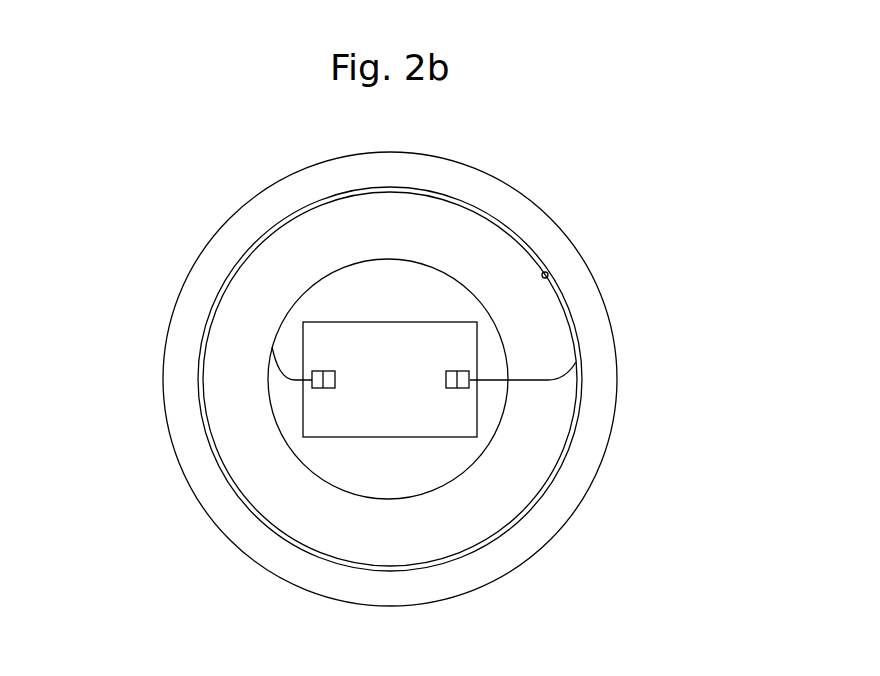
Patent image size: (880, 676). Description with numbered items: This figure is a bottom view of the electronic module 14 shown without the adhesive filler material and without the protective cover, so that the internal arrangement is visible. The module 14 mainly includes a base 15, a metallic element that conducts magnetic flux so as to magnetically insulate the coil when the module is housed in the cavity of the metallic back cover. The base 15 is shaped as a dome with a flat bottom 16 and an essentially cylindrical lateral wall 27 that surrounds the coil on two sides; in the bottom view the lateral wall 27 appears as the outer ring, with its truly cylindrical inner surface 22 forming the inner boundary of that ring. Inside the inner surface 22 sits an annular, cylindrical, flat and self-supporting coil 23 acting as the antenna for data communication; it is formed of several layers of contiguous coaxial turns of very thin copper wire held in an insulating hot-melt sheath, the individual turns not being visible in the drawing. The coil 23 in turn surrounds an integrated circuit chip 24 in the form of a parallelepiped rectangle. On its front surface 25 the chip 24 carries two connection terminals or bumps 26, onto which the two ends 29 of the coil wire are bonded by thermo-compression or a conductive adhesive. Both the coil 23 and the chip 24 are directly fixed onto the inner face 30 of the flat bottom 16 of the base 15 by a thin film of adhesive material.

The electronic module 14 is at (633, 398).
The base 15 is at (582, 467).
The flat bottom 16 is at (207, 447).
The inner surface 22 is at (545, 273).
The coil 23 is at (467, 225).
The integrated circuit chip 24 is at (400, 307).
The front surface 25 is at (362, 333).
The connection terminals or bumps 26 is at (322, 388).
The lateral wall 27 is at (183, 330).
The ends of the metal wire 29 is at (325, 371).
The inner face 30 is at (585, 376).